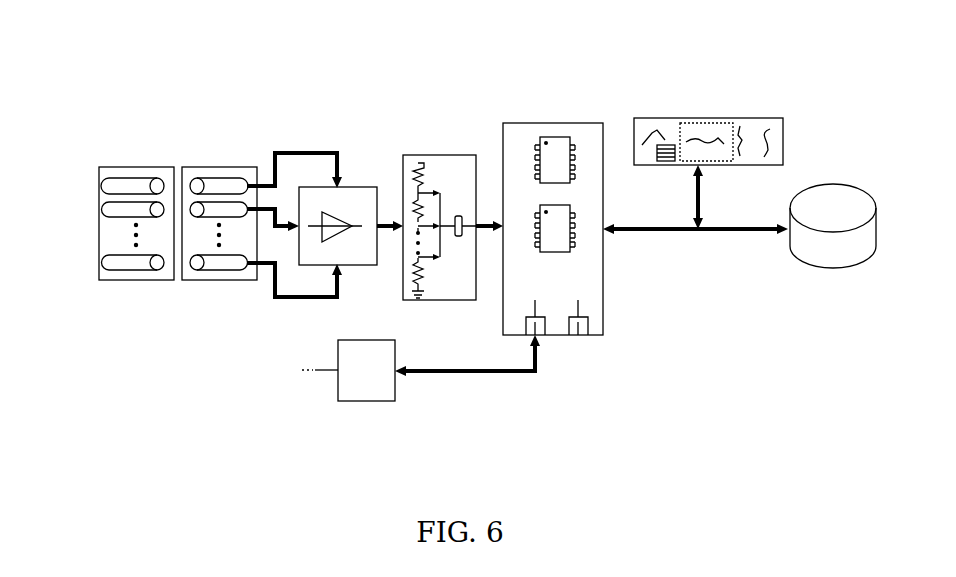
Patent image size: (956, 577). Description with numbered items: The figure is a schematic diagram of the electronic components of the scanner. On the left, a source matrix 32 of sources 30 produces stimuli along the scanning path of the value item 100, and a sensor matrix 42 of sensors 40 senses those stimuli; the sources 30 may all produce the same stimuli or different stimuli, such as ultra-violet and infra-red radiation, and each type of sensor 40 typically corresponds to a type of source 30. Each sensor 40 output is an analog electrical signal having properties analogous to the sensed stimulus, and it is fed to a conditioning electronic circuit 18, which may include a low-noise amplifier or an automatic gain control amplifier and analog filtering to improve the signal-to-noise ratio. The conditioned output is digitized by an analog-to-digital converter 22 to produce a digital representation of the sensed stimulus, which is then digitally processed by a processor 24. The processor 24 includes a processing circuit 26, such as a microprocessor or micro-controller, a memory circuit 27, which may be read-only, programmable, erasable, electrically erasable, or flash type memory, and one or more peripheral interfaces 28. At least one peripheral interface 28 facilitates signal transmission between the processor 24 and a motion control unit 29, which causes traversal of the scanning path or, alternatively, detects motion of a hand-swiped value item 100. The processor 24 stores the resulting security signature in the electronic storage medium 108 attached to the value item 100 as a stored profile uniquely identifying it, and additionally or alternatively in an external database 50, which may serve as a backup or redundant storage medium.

The source matrix 32 is at (106, 143).
The sources 30 is at (142, 182).
The sensor matrix 42 is at (198, 148).
The sensors 40 is at (215, 183).
The conditioning electronic circuit 18 is at (343, 203).
The analog-to-digital converter 22 is at (451, 168).
The processor 24 is at (540, 128).
The processing circuit 26 is at (563, 145).
The memory circuit 27 is at (558, 243).
The peripheral interfaces 28 is at (538, 328).
The motion control unit 29 is at (350, 352).
The value item 100 is at (753, 127).
The electronic storage medium 108 is at (664, 147).
The external database 50 is at (828, 202).